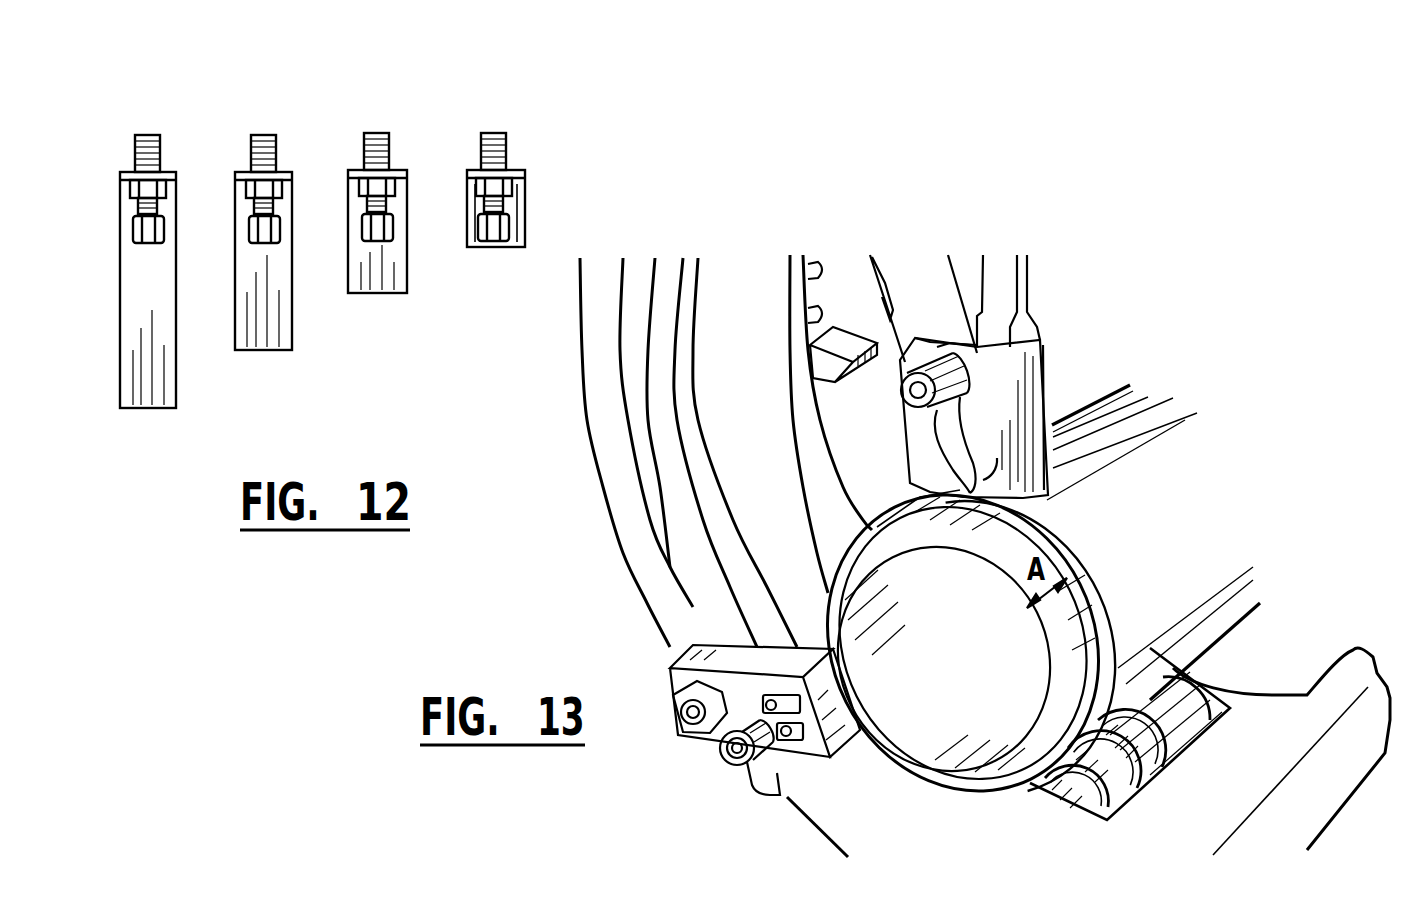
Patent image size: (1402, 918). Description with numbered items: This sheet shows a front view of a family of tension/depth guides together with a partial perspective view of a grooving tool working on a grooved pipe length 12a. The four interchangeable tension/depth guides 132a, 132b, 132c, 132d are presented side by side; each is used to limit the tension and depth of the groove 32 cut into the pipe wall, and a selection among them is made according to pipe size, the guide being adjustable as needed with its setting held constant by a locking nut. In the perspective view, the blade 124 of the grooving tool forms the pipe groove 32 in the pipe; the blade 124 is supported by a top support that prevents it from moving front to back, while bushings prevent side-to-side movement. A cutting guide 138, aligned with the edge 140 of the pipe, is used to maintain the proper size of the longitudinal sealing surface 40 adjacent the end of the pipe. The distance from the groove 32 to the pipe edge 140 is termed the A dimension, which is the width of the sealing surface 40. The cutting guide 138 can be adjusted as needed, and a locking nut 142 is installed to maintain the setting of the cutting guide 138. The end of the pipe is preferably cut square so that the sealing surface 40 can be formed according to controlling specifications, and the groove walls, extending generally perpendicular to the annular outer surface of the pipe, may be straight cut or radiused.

In FIG. 12, the tension/depth guide 132a is at (525, 197).
In FIG. 12, the tension/depth guide 132b is at (407, 240).
In FIG. 12, the tension/depth guide 132c is at (292, 262).
In FIG. 12, the tension/depth guide 132d is at (176, 315).
In FIG. 13, the blade 124 is at (1124, 366).
In FIG. 13, the rail section 12a is at (1231, 521).
In FIG. 13, the pipe groove 32 is at (1098, 598).
In FIG. 13, the longitudinal sealing surface 40 is at (1089, 676).
In FIG. 13, the pipe edge 140 is at (897, 727).
In FIG. 13, the locking nut 142 is at (713, 752).
In FIG. 13, the cutting guide 138 is at (817, 788).